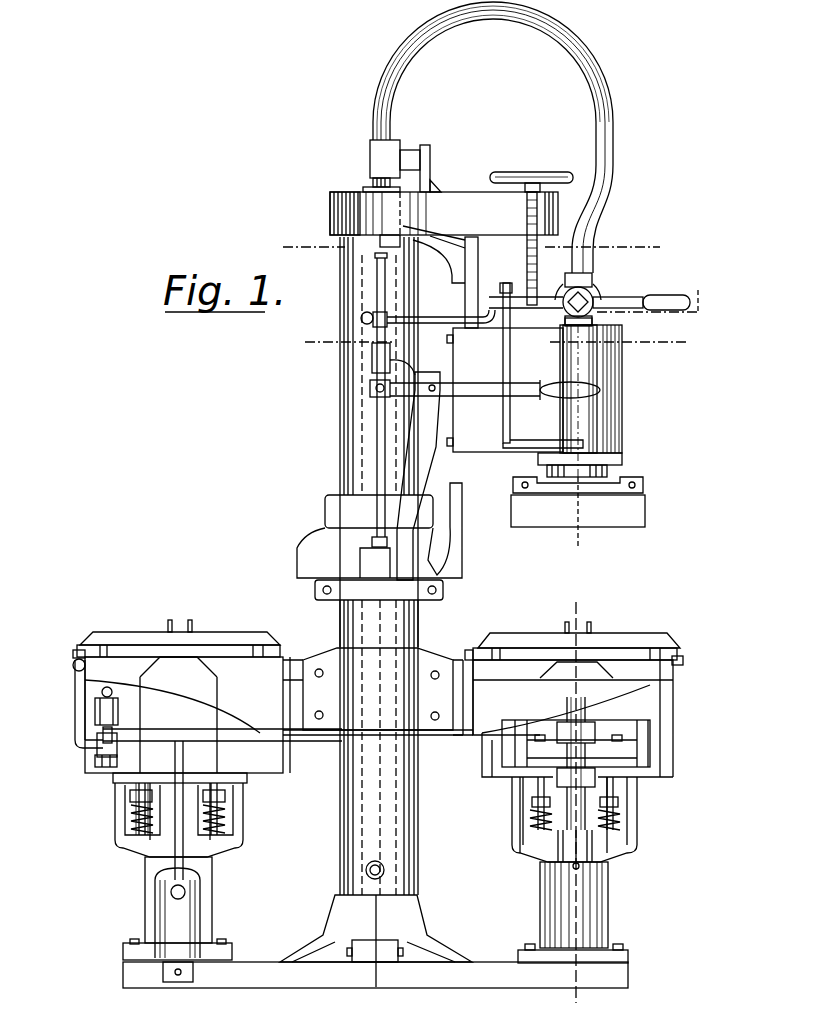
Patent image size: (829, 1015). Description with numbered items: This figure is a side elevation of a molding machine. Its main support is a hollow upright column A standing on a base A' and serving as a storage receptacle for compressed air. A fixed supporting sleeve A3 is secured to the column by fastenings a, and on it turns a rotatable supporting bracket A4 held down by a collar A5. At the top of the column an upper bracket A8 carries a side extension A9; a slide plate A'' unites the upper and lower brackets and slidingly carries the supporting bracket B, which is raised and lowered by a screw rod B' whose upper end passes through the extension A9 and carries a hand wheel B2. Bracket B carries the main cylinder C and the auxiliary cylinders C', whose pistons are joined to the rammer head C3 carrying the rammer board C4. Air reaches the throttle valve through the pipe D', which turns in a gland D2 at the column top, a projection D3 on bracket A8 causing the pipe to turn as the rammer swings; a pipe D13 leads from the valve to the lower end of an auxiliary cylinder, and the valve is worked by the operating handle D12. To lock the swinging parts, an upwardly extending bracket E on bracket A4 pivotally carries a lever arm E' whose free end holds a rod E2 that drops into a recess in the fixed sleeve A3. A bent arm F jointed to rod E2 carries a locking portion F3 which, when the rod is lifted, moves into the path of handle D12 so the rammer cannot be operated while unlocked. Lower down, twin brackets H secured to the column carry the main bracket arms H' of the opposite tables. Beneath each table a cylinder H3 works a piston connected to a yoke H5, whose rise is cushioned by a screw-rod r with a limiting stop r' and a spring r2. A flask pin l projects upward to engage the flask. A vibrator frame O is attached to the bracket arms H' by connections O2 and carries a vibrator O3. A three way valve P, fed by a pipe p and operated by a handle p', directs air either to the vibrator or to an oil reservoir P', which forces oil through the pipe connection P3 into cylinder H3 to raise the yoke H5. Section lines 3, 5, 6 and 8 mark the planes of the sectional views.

The pipe D' is at (493, 137).
The gland D2 is at (368, 185).
The projection D3 is at (432, 170).
The hand wheel B2 is at (548, 174).
The upper bracket A8 is at (331, 212).
The side extension A9 is at (444, 237).
The section line 6— 6 is at (471, 247).
The screw rod B' is at (520, 248).
The slide plate A'' is at (489, 282).
The bent arm F is at (432, 318).
The bent end or locking portion F3 is at (597, 293).
The operating handle D12 is at (655, 300).
The section line 3— 3 is at (637, 419).
The section line 5— 5 is at (494, 342).
The lever arm E' is at (495, 376).
The pipe D13 is at (510, 372).
The main cylinder C is at (594, 397).
The supporting arm or bracket B is at (505, 390).
The auxiliary cylinder C' is at (613, 401).
The bracket E is at (372, 476).
The rod E2 is at (375, 456).
The collar A5 is at (333, 506).
The supporting bracket A4 is at (333, 553).
The fastenings a is at (445, 591).
The fixed supporting sleeve A3 is at (393, 602).
The rammer head C3 is at (645, 488).
The rammer board C4 is at (641, 520).
The hollow upright column A is at (390, 566).
The base A' is at (375, 941).
The twin brackets H is at (378, 678).
The main bracket arms H' is at (378, 731).
The flask pin l is at (592, 623).
The section line 8— 8 is at (574, 801).
The vibrator O3 is at (76, 656).
The connections O2 is at (469, 650).
The vibrator frame O is at (683, 661).
The handle p' is at (117, 706).
The three way valve P is at (76, 756).
The pipe p is at (222, 803).
The limiting stop r' is at (373, 790).
The screw-rod r is at (370, 806).
The spring r2 is at (219, 816).
The pipe connection P3 is at (130, 816).
The yoke H5 is at (620, 850).
The cylinder H3 is at (600, 906).
The oil reservoir P' is at (153, 913).